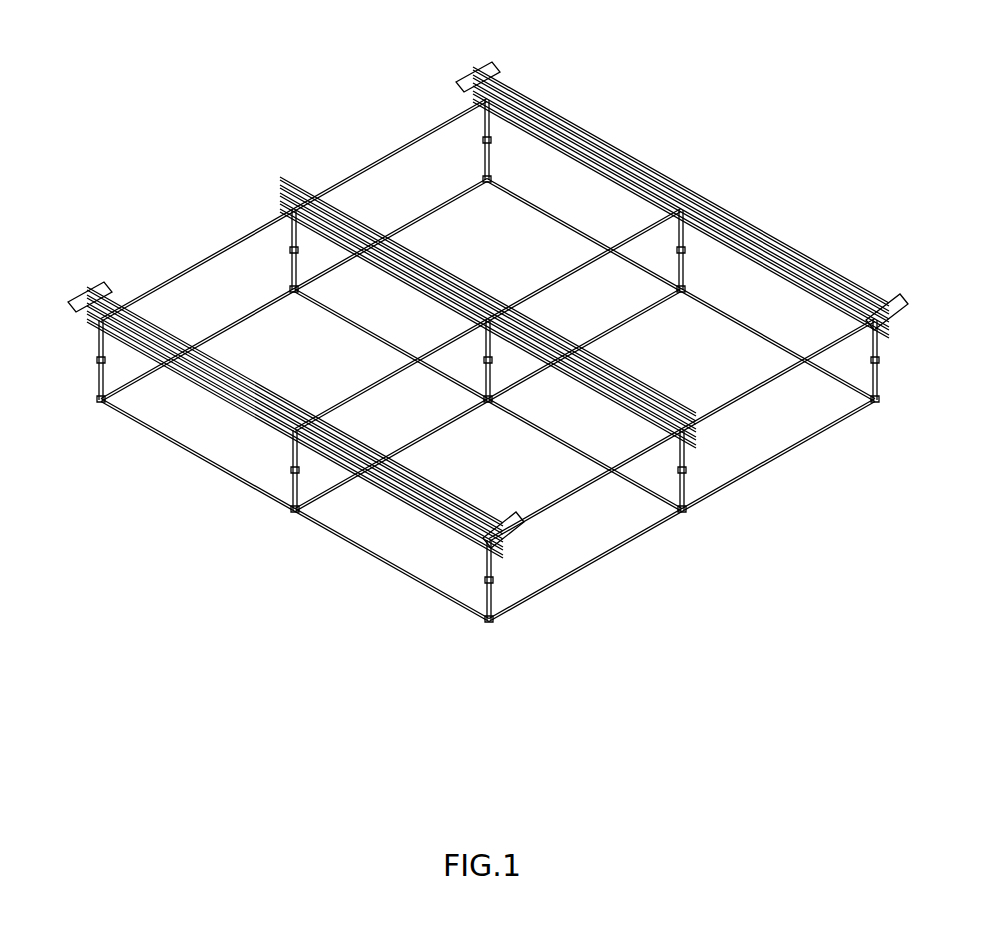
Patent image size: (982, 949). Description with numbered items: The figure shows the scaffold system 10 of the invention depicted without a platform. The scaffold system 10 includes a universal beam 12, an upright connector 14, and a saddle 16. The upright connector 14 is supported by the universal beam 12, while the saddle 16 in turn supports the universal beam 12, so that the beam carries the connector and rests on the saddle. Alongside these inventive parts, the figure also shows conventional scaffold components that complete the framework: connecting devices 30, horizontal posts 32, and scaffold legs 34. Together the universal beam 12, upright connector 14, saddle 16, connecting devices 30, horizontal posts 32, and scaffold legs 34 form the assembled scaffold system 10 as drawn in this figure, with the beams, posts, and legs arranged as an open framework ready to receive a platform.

The scaffold system 10 is at (264, 132).
The universal beam 12 is at (613, 128).
The upright connector 14 is at (477, 87).
The saddle 16 is at (712, 203).
The connecting devices 30 is at (690, 508).
The horizontal posts 32 is at (385, 155).
The scaffold legs 34 is at (292, 238).